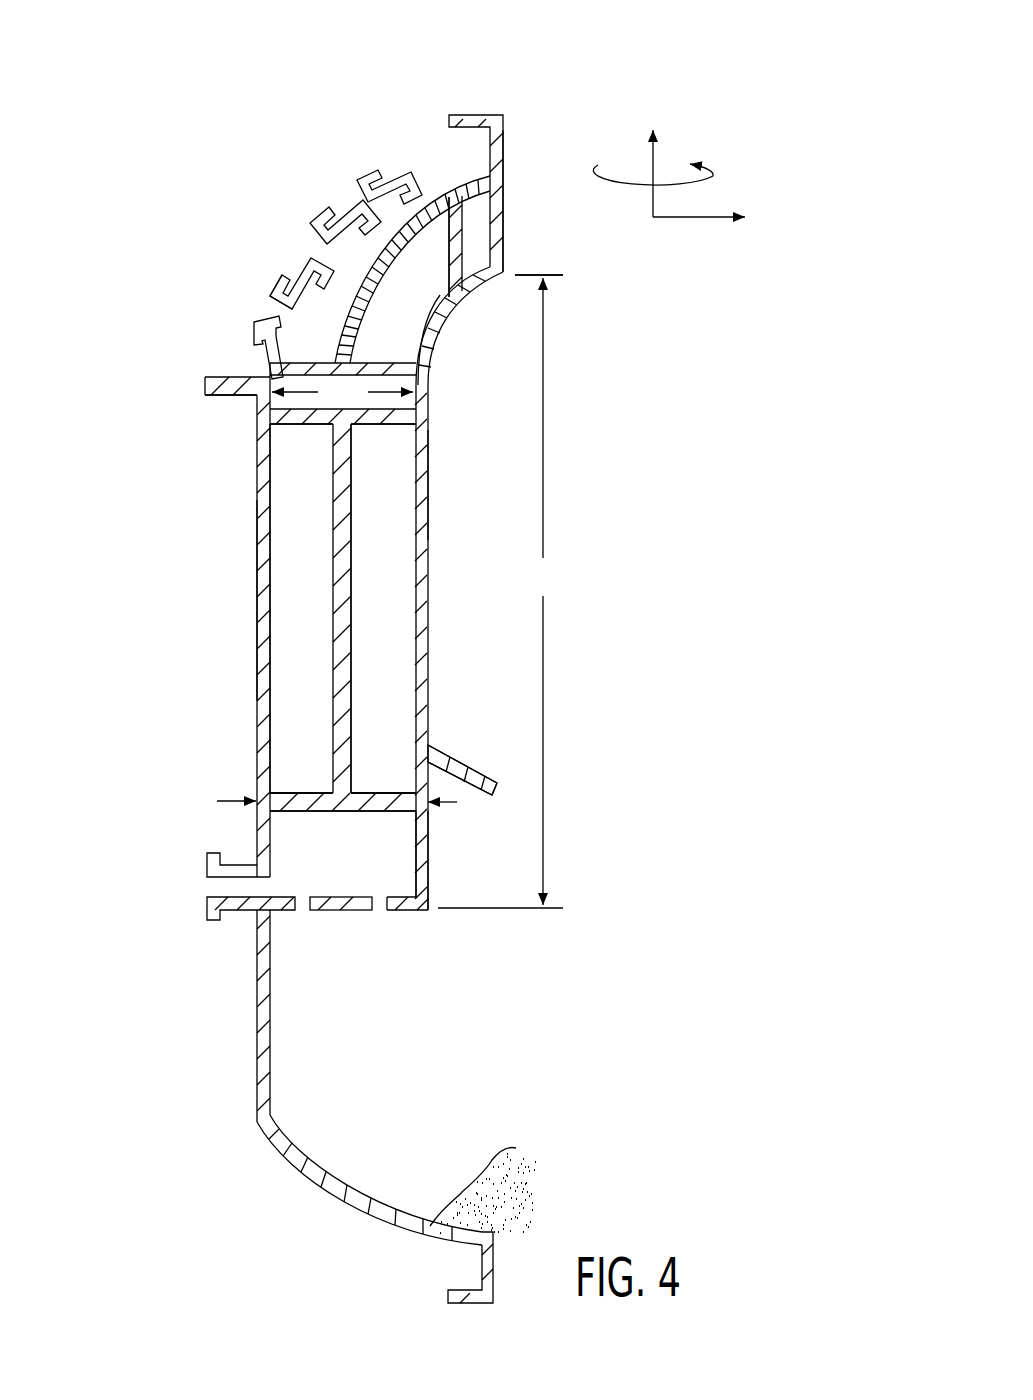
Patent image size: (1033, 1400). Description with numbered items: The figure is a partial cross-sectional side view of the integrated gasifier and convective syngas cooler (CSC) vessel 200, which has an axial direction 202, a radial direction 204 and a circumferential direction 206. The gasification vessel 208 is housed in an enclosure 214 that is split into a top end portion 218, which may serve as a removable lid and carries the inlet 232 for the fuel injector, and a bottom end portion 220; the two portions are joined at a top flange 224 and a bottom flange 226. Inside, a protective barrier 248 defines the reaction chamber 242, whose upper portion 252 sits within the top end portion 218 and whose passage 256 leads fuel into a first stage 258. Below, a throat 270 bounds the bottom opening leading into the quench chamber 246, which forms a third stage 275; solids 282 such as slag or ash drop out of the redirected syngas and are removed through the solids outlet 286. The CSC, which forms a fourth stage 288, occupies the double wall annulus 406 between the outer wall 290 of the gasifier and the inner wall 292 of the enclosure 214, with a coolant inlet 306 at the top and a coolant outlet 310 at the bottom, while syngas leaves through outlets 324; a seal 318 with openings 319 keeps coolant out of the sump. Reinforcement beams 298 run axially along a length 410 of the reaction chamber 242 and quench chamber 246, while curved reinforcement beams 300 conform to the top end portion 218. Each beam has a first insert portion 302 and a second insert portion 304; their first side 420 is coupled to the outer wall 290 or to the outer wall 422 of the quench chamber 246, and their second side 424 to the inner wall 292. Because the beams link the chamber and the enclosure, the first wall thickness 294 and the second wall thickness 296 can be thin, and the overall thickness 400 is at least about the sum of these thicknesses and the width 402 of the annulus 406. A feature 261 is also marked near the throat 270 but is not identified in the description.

The integrated gasifier and convective syngas cooler vessel 200 is at (212, 46).
The axial axis 202 is at (656, 150).
The radial axis 204 is at (698, 217).
The circumferential axis 206 is at (688, 180).
The gasification vessel 208 is at (228, 197).
The enclosure 214 is at (273, 362).
The top end portion 218 is at (388, 98).
The bottom end portion 220 is at (170, 553).
The top flange 224 is at (222, 377).
The bottom flange 226 is at (222, 396).
The inlet 232 is at (478, 143).
The reaction chamber 242 is at (466, 489).
The quench chamber 246 is at (458, 791).
The protective barrier 248 is at (433, 336).
The upper portion of the reaction chamber 252 is at (570, 318).
The passage 256 is at (478, 228).
The first stage 258 is at (468, 450).
The strut region 261 is at (497, 722).
The throat 270 is at (453, 763).
The third stage 275 is at (492, 827).
The solids 282 is at (460, 1187).
The solids outlet 286 is at (460, 1303).
The fourth stage 288 is at (290, 634).
The outer wall of the gasifier 290 is at (418, 590).
The inner wall of the enclosure 292 is at (262, 670).
The first wall thickness 294 is at (418, 330).
The second wall thickness 296 is at (312, 527).
The reinforcement beams 298 is at (333, 597).
The reinforcement beams 300 is at (424, 242).
The first insert portion 302 is at (462, 210).
The second insert portion 304 is at (305, 360).
The inlet 306 is at (330, 200).
The outlet 310 is at (207, 900).
The seal 318 is at (337, 913).
The openings 319 is at (295, 915).
The outlets 324 is at (325, 232).
The overall thickness 400 is at (232, 800).
The width 402 is at (342, 393).
The annulus 406 is at (392, 566).
The length 410 is at (500, 591).
The first side 420 is at (440, 266).
The outer wall of the quench chamber 422 is at (420, 852).
The second side 424 is at (443, 215).